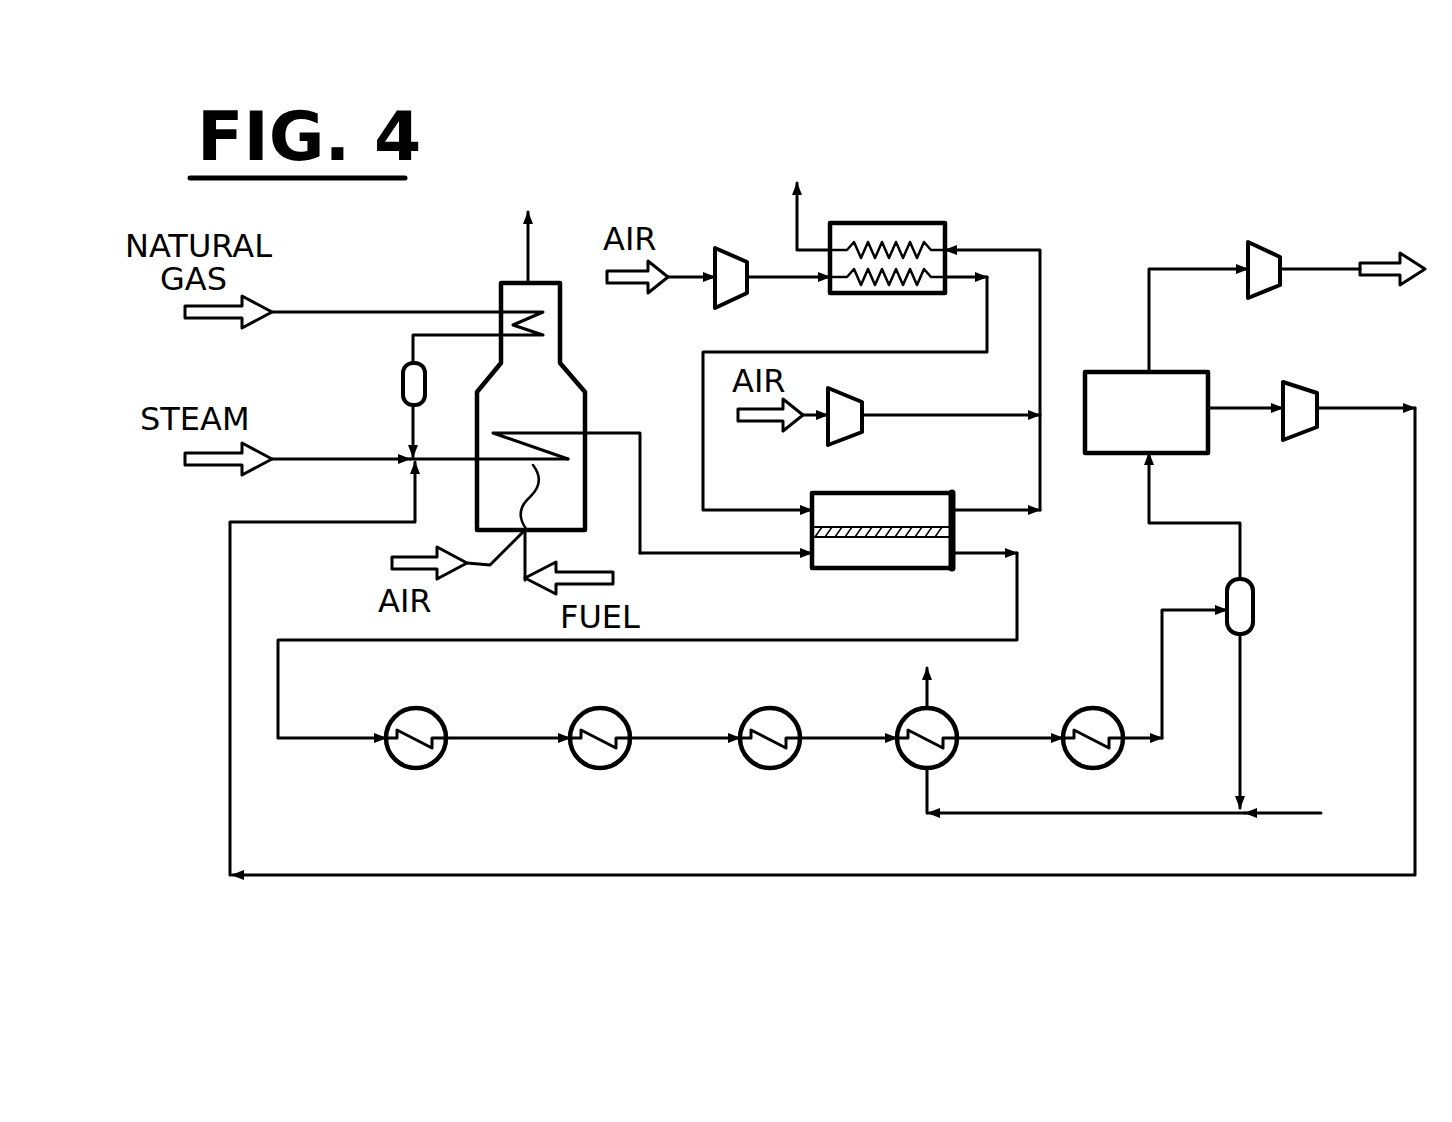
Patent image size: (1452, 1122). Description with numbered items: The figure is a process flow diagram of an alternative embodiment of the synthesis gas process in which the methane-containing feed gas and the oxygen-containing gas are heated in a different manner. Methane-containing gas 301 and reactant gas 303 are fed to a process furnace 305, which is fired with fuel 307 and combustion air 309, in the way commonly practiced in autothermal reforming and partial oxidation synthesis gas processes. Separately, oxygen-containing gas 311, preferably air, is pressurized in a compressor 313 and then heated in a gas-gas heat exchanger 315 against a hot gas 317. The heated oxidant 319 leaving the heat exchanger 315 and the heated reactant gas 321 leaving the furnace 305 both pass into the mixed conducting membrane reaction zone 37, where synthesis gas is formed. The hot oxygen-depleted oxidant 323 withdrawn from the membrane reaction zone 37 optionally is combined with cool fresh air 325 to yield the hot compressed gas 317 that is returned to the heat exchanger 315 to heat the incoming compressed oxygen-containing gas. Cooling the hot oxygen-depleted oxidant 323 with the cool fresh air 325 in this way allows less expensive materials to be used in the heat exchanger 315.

The methane-containing gas 301 is at (421, 312).
The reactant gas 303 is at (448, 462).
The process furnace 305 is at (580, 380).
The fuel 307 is at (532, 553).
The combustion air 309 is at (492, 565).
The oxygen-containing gas 311 is at (690, 277).
The compressor 313 is at (733, 303).
The gas-gas heat exchanger 315 is at (885, 223).
The hot gas 317 is at (998, 250).
The heated oxidant 319 is at (703, 372).
The heated reactant gas 321 is at (690, 553).
The hot oxygen-depleted oxidant 323 is at (1003, 512).
The cool fresh air 325 is at (978, 412).
The mixed conducting membrane reaction zone 37 is at (900, 478).